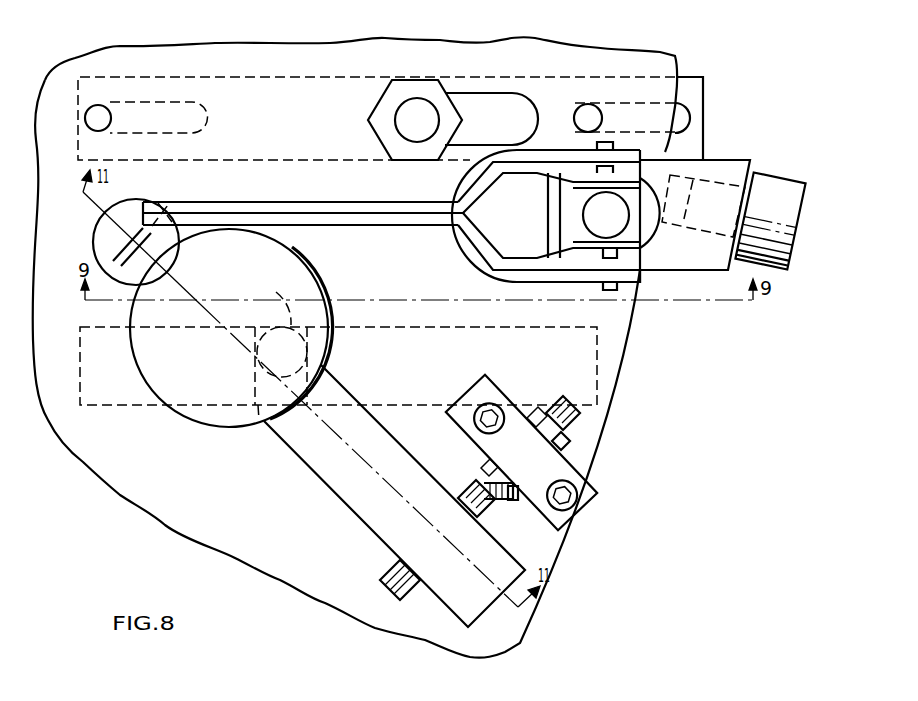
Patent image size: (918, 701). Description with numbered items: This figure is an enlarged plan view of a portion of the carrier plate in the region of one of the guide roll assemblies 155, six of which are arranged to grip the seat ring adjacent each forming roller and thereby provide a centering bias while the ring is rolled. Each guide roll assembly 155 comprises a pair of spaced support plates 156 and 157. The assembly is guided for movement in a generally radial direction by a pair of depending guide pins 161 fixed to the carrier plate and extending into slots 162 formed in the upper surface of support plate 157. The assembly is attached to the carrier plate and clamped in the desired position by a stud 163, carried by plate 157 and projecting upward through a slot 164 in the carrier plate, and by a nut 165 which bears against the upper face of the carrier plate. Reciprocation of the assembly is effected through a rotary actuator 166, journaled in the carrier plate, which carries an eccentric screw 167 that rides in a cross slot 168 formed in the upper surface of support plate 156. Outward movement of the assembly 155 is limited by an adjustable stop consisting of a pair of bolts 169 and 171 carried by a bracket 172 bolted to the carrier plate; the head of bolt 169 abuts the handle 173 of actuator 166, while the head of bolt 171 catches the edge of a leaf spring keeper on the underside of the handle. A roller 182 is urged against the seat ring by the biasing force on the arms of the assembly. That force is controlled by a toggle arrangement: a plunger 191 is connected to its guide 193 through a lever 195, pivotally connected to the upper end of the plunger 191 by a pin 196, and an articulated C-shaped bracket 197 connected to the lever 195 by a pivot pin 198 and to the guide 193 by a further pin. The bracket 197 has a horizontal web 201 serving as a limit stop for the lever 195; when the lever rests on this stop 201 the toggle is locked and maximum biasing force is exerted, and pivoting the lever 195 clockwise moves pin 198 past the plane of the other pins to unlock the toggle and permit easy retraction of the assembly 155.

The guide roll assembly 155 is at (651, 316).
The support plate 156 is at (120, 407).
The support plate 157 is at (703, 92).
The guide pin 161 is at (112, 118).
The slot 162 is at (178, 103).
The stud 163 is at (420, 102).
The slot 164 is at (503, 93).
The nut 165 is at (411, 78).
The rotary actuator 166 is at (313, 272).
The eccentric screw 167 is at (290, 298).
The cross slot 168 is at (260, 420).
The bolt 169 is at (473, 482).
The bolt 171 is at (392, 566).
The bracket 172 is at (575, 462).
The handle 173 is at (340, 493).
The roller 182 is at (777, 173).
The plunger 191 is at (583, 214).
The guide 193 is at (657, 230).
The lever 195 is at (358, 200).
The pin 196 is at (617, 256).
The C-shaped bracket 197 is at (575, 285).
The pivot pin 198 is at (617, 285).
The horizontal web 201 is at (553, 227).